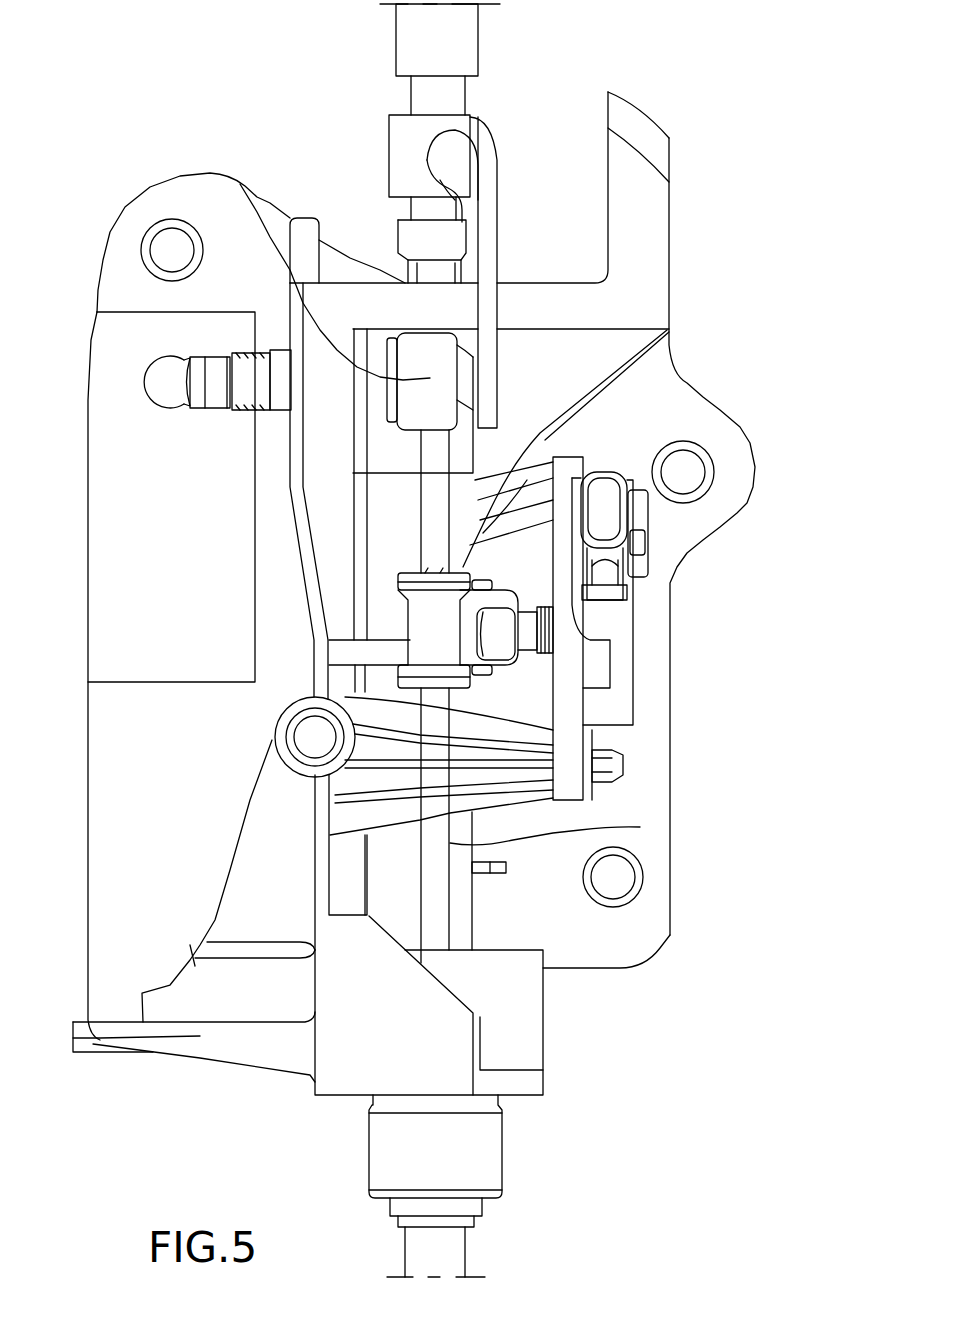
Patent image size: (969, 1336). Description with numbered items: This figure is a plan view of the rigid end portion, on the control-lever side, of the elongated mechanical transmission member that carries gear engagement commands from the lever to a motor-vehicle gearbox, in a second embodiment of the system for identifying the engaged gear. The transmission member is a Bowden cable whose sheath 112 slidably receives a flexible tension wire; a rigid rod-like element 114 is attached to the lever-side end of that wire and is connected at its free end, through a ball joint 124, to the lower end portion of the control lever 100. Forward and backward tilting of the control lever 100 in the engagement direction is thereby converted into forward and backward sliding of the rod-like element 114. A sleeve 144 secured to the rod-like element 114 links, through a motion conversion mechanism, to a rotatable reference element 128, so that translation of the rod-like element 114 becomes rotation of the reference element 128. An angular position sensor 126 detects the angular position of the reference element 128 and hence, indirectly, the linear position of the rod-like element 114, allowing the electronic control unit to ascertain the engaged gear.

The control lever 100 is at (437, 90).
The sheath 112 is at (445, 1244).
The rod-like element 114 is at (600, 829).
The ball joint 124 is at (227, 177).
The angular position sensor 126 is at (648, 675).
The rotatable reference element 128 is at (533, 652).
The sleeve 144 is at (408, 622).